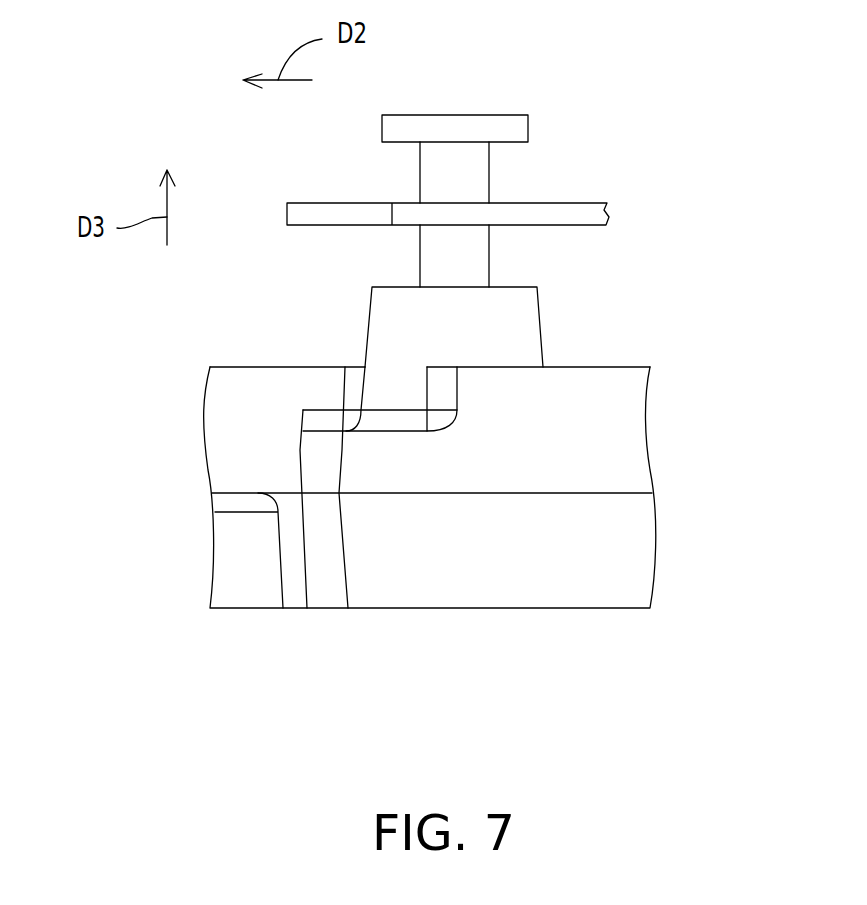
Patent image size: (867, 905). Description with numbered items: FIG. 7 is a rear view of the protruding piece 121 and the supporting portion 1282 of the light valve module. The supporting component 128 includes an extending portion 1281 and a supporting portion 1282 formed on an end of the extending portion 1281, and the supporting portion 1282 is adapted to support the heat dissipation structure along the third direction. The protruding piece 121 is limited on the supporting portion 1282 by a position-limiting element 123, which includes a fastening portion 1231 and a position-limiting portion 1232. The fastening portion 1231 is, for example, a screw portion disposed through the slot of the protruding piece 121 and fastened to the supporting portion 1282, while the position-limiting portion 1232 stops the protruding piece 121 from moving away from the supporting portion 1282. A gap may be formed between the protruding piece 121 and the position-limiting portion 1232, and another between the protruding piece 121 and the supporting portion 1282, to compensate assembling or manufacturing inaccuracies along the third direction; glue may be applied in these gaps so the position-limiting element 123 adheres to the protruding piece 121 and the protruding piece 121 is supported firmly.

The protruding piece 121 is at (335, 212).
The position-limiting element 123 is at (583, 201).
The fastening portion 1231 is at (473, 257).
The position-limiting portion 1232 is at (510, 134).
The supporting component 128 is at (497, 447).
The extending portion 1281 is at (637, 552).
The supporting portion 1282 is at (390, 327).